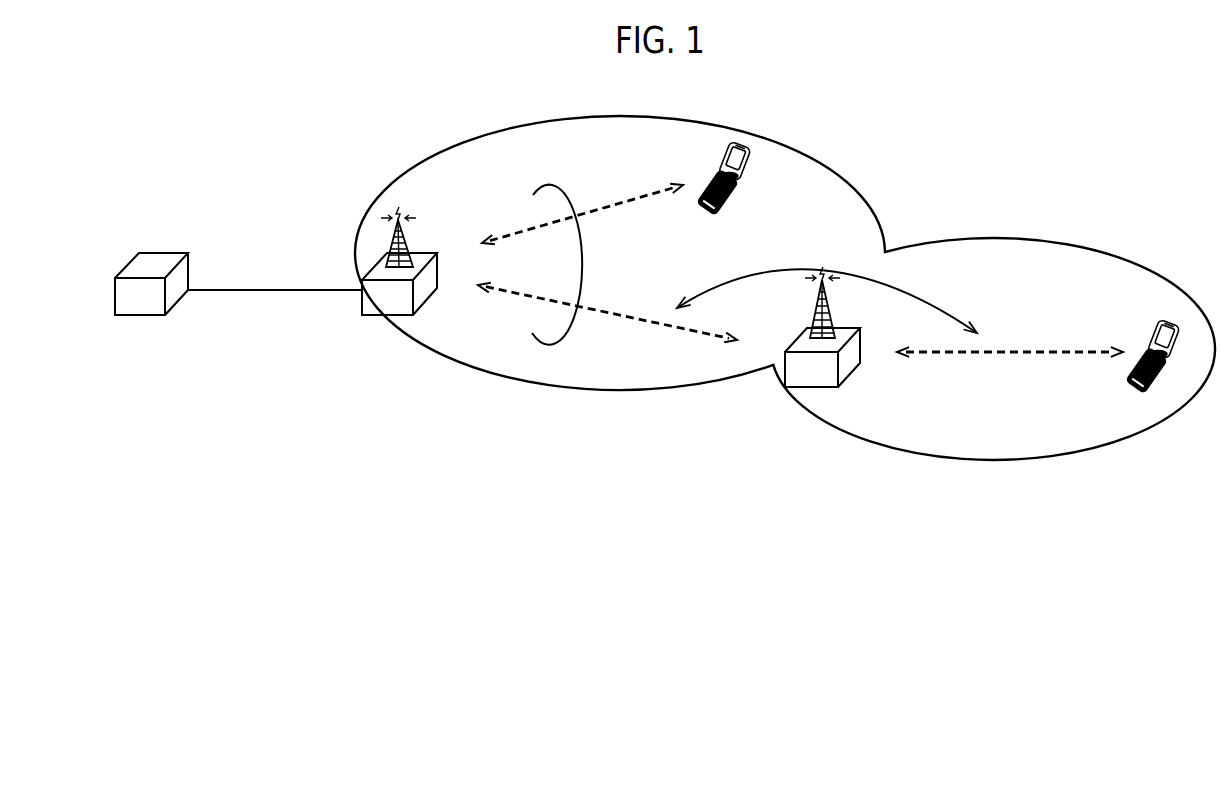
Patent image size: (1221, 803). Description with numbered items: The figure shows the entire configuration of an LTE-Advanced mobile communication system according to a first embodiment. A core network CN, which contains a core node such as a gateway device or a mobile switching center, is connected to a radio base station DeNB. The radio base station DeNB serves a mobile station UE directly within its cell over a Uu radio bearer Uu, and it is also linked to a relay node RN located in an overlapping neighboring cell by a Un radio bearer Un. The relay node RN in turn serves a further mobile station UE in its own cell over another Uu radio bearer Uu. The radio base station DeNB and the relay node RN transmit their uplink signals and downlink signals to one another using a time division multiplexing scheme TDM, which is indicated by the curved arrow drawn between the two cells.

The core network CN is at (151, 302).
The radio base station DeNB is at (399, 278).
The relay node RN is at (822, 342).
The mobile station UE is at (942, 274).
The Uu radio bearer Uu is at (802, 280).
The Un radio bearer Un is at (607, 313).
The time division multiplexing scheme TDM is at (827, 287).